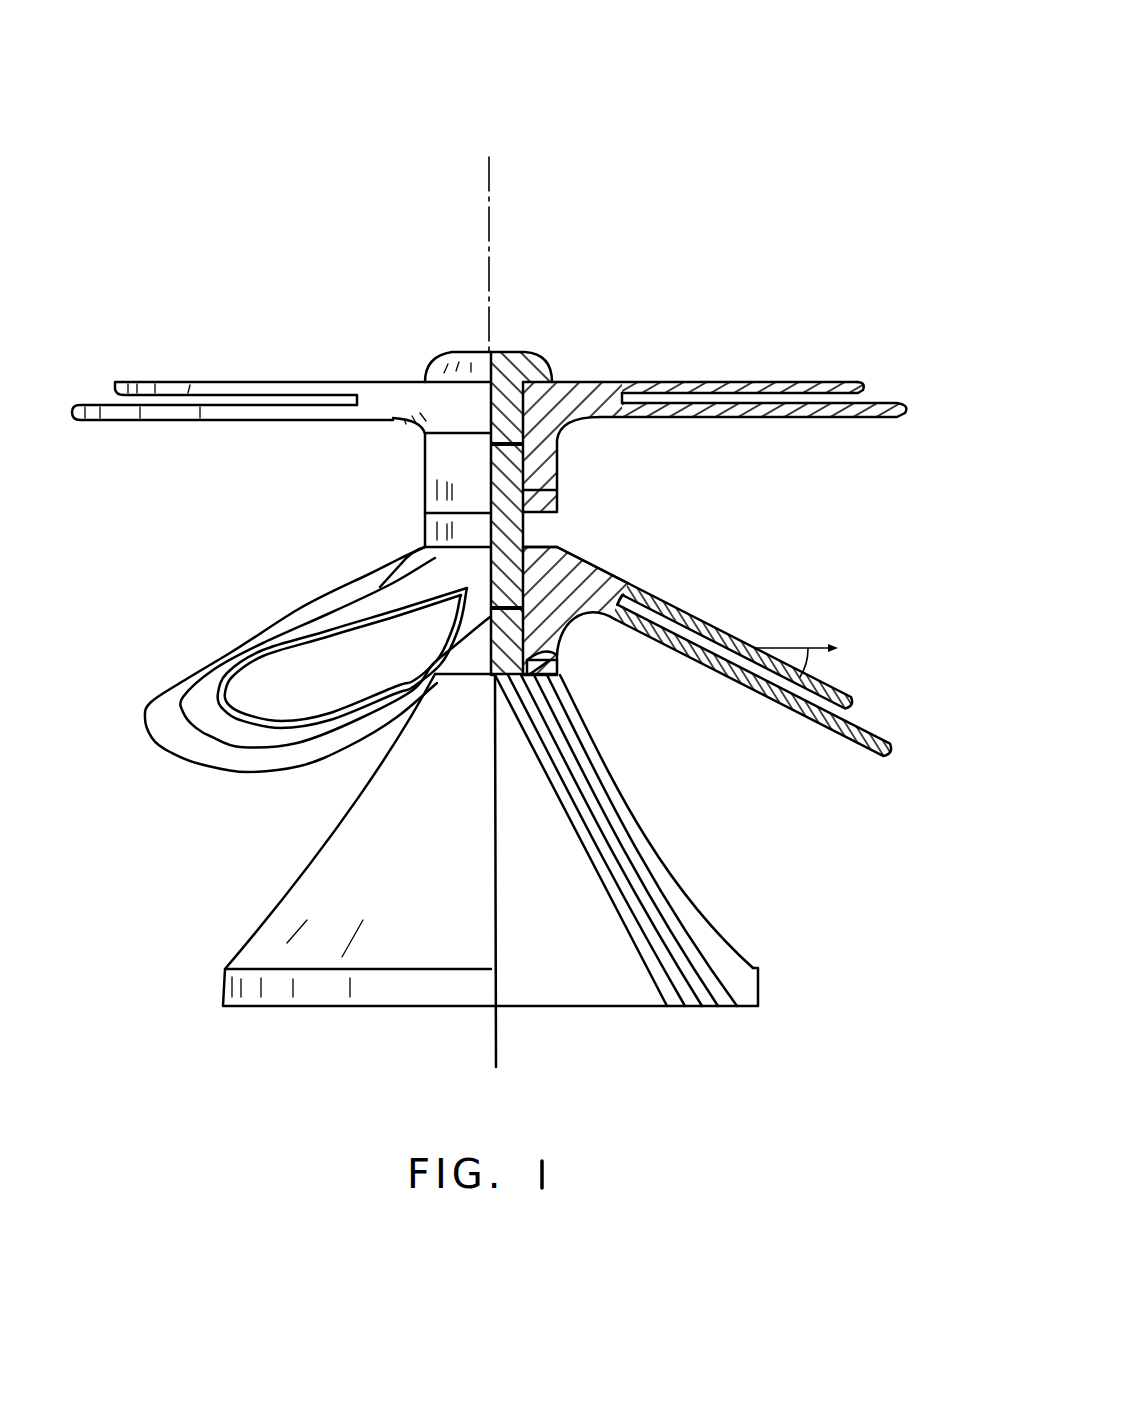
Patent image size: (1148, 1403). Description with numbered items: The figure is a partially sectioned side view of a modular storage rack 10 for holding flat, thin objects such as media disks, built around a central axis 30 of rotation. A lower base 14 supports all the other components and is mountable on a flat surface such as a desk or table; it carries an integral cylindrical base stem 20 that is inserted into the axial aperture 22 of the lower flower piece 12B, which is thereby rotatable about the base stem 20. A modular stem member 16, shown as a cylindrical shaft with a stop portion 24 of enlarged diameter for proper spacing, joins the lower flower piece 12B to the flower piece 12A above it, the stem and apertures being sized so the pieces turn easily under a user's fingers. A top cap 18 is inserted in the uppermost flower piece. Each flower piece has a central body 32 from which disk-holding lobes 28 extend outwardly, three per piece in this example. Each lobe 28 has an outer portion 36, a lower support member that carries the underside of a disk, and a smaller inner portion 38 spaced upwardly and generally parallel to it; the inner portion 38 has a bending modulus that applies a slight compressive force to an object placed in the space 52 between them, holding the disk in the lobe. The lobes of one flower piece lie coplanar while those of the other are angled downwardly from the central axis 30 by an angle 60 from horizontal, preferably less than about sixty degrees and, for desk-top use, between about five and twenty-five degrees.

The storage rack 10 is at (489, 558).
The flower piece 12A is at (415, 383).
The lower flower piece 12B is at (440, 566).
The lower base 14 is at (310, 899).
The stem member 16 is at (560, 560).
The top cap 18 is at (520, 358).
The base stem 20 is at (563, 662).
The axial aperture 22 is at (528, 490).
The stop portion 24 is at (557, 522).
The lobular member 28 is at (489, 536).
The central axis 30 is at (490, 194).
The central body 32 is at (437, 478).
The outer portion 36 is at (707, 417).
The inner portion 38 is at (708, 392).
The space 52 is at (780, 417).
The angle 60 is at (812, 663).